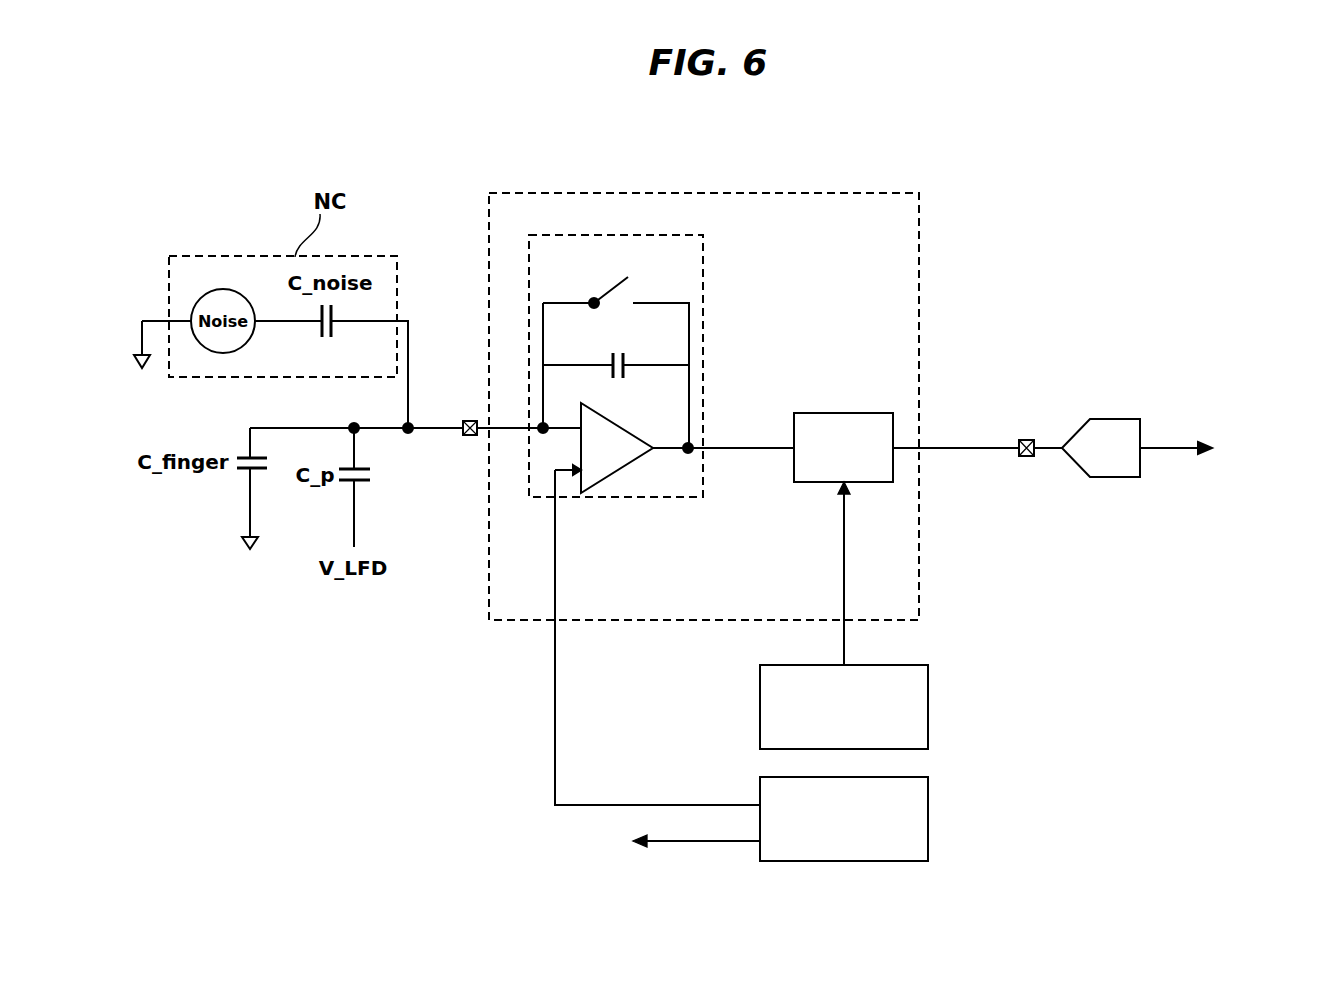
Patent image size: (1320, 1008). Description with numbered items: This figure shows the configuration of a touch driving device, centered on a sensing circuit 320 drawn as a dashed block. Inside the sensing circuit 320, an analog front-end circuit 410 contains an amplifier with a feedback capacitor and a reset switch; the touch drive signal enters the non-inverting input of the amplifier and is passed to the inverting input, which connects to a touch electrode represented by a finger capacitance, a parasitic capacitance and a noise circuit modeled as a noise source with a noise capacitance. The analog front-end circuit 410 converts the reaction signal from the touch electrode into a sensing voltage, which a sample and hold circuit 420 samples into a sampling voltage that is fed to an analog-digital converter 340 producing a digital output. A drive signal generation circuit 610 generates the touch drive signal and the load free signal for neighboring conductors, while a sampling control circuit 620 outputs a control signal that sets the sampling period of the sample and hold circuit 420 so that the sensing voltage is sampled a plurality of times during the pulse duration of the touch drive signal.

The sensing circuit 320 is at (921, 230).
The analog front-end circuit 410 is at (705, 478).
The sample and hold circuit 420 is at (845, 413).
The analog-digital converter 340 is at (1122, 419).
The sampling control circuit 620 is at (930, 707).
The drive signal generation circuit 610 is at (930, 815).